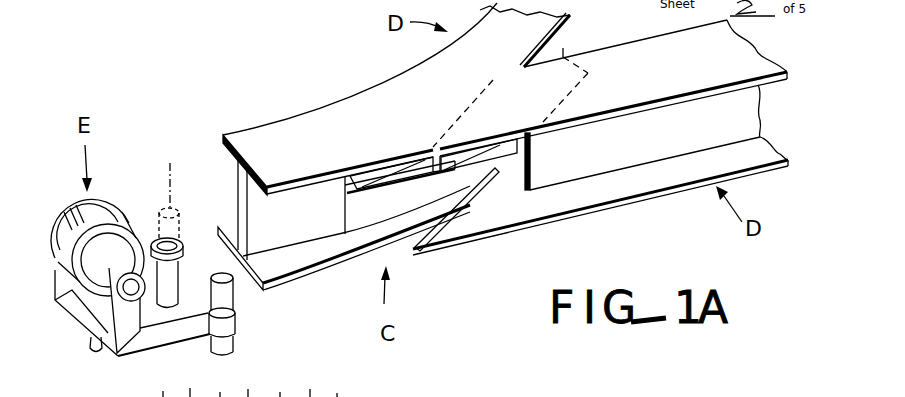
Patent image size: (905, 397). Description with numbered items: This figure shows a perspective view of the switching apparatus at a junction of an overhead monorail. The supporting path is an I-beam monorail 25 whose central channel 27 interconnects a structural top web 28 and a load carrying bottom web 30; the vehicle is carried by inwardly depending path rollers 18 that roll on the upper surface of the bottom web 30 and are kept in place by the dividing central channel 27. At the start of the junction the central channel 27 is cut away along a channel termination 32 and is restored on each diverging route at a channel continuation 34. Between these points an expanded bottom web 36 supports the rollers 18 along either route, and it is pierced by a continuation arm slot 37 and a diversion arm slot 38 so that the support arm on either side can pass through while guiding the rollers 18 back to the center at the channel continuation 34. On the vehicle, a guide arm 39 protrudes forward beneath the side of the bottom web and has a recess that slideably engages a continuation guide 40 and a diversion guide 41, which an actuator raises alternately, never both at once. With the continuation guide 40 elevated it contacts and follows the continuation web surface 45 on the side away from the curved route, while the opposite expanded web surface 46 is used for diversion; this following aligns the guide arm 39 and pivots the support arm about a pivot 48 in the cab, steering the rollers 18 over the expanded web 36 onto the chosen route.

The path roller 18 is at (112, 213).
The I-beam monorail 25 is at (258, 137).
The central channel 27 is at (240, 200).
The structural top web 28 is at (698, 67).
The load carrying bottom web 30 is at (253, 285).
The channel termination 32 is at (345, 185).
The channel continuation 34 is at (445, 165).
The expanded bottom web 36 is at (358, 250).
The continuation arm slot 37 is at (363, 192).
The diversion arm slot 38 is at (412, 247).
The guide arm 39 is at (186, 236).
The continuation guide 40 is at (236, 303).
The diversion guide 41 is at (174, 189).
The continuation web surface 45 is at (437, 248).
The expanded web surface 46 is at (371, 178).
The pivot 48 is at (92, 348).